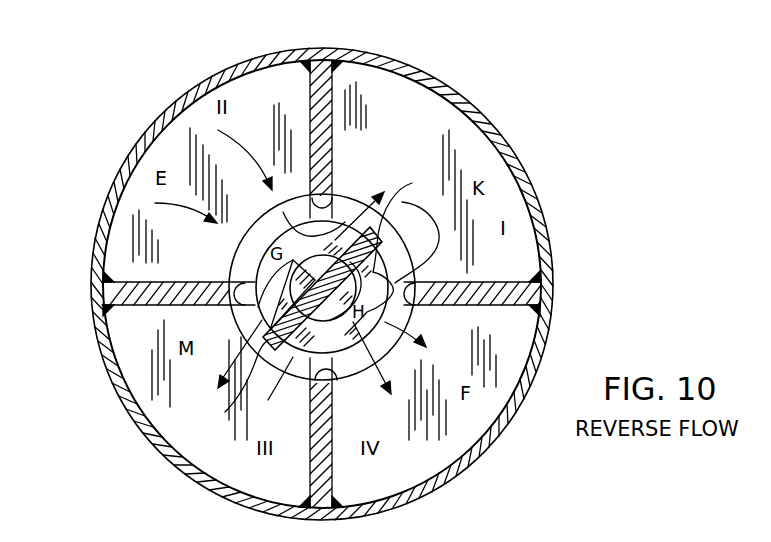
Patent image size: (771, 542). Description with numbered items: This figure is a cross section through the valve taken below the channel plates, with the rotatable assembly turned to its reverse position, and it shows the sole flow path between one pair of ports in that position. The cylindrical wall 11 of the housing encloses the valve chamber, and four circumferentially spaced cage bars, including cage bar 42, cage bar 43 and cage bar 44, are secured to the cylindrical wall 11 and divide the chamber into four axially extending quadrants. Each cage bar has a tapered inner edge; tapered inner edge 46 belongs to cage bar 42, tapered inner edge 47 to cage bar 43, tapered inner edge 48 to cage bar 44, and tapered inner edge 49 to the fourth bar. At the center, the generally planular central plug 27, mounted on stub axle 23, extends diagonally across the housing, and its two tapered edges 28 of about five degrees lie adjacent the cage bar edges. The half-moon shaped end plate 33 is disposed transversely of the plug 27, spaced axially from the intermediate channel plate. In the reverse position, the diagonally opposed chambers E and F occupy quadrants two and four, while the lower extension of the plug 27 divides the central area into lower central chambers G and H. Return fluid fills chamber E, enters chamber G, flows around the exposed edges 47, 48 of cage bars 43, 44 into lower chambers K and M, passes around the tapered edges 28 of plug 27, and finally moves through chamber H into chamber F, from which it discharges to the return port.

The cylindrical wall 11 is at (532, 189).
The cage bar 42 is at (527, 293).
The cage bar 43 is at (322, 68).
The cage bar 44 is at (112, 297).
The tapered inner edge 49 is at (339, 380).
The tapered inner edge 46 is at (407, 282).
The tapered inner edge 47 is at (333, 203).
The tapered inner edge 48 is at (243, 284).
The stub axle 23 is at (333, 288).
The central plug 27 is at (292, 257).
The tapered edges 28 is at (319, 301).
The end plate 33 is at (377, 305).